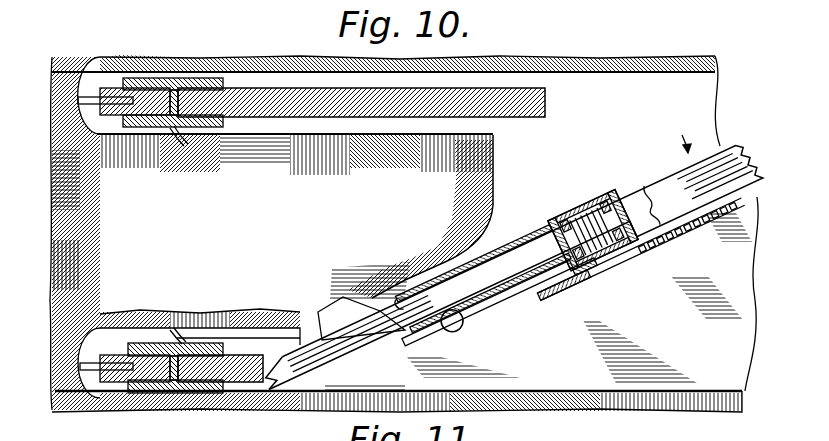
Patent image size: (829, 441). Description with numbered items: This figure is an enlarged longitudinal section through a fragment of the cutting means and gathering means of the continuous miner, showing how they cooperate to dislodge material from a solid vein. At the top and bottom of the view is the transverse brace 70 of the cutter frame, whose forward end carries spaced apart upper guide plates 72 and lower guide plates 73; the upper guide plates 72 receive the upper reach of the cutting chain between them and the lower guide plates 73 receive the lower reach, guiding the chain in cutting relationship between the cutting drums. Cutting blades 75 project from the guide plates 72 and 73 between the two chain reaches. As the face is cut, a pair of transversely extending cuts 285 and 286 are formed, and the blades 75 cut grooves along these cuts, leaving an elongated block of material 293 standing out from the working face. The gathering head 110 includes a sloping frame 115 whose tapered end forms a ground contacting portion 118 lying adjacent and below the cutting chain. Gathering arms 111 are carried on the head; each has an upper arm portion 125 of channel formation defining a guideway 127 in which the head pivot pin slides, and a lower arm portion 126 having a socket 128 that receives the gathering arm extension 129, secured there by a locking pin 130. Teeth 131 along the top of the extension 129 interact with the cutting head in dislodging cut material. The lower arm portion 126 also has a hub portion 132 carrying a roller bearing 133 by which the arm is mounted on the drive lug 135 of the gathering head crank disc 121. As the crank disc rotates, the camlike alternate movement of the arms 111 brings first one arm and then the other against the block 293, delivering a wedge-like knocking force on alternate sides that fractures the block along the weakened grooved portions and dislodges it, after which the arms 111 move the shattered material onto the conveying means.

The transverse brace 70 is at (520, 118).
The upper guide plates 72 is at (192, 80).
The lower guide plates 73 is at (204, 344).
The cutting blades 75 is at (173, 132).
The gathering head 110 is at (768, 229).
The gathering arms 111 is at (670, 136).
The sloping frame 115 is at (748, 328).
The ground contacting portion 118 is at (358, 394).
The gathering head crank disc 121 is at (547, 288).
The upper arm portion 125 is at (682, 173).
The lower arm portion 126 is at (527, 246).
The guideway 127 is at (645, 209).
The socket 128 is at (453, 334).
The gathering arm extension 129 is at (272, 393).
The locking pin 130 is at (503, 308).
The teeth 131 is at (344, 306).
The hub portion 132 is at (640, 249).
The roller bearing 133 is at (591, 262).
The drive lug 135 is at (589, 226).
The transversely extending cut 285 is at (102, 133).
The transversely extending cut 286 is at (58, 402).
The elongated block of material 293 is at (493, 158).